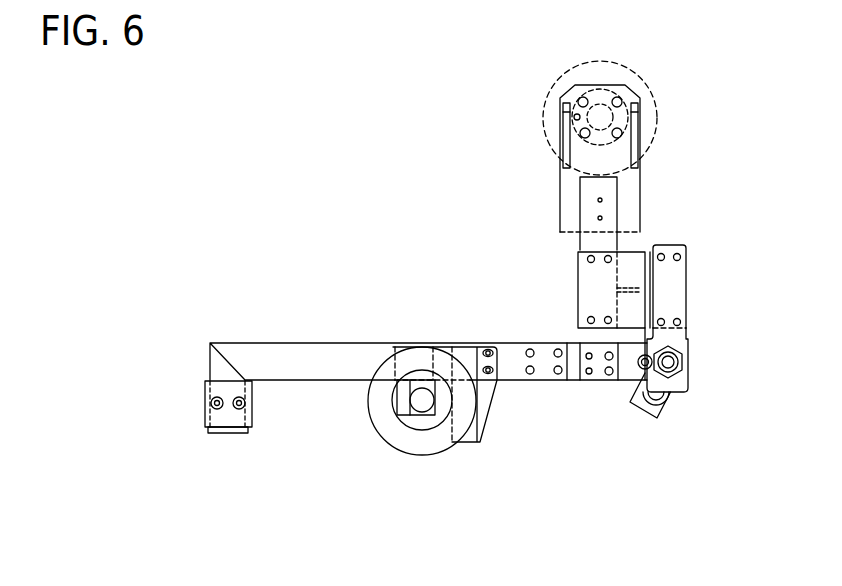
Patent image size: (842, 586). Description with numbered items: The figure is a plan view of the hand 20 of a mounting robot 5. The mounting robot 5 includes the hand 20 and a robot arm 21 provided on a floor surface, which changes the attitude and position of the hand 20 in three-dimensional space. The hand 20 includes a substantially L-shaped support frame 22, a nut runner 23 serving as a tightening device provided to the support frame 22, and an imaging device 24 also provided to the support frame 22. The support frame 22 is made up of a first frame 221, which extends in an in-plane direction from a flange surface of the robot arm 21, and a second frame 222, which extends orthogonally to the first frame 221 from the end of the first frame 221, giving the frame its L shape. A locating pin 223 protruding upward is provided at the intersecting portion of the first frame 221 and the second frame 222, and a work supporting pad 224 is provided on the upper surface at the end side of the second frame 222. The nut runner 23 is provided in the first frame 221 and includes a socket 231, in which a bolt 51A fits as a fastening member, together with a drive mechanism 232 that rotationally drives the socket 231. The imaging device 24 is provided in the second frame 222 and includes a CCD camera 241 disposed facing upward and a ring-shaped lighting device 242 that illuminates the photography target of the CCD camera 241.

The mounting robot 5 is at (230, 96).
The hand 20 is at (320, 188).
The robot arm 21 is at (538, 112).
The support frame 22 is at (480, 232).
The first frame 221 is at (597, 242).
The second frame 222 is at (510, 352).
The locating pin 223 is at (642, 378).
The work supporting pad 224 is at (240, 418).
The nut runner 23 is at (699, 325).
The socket 231 is at (683, 362).
The drive mechanism 232 is at (683, 350).
The imaging device 24 is at (470, 503).
The CCD camera 241 is at (423, 403).
The lighting device 242 is at (435, 440).
The bolt 51A is at (670, 368).